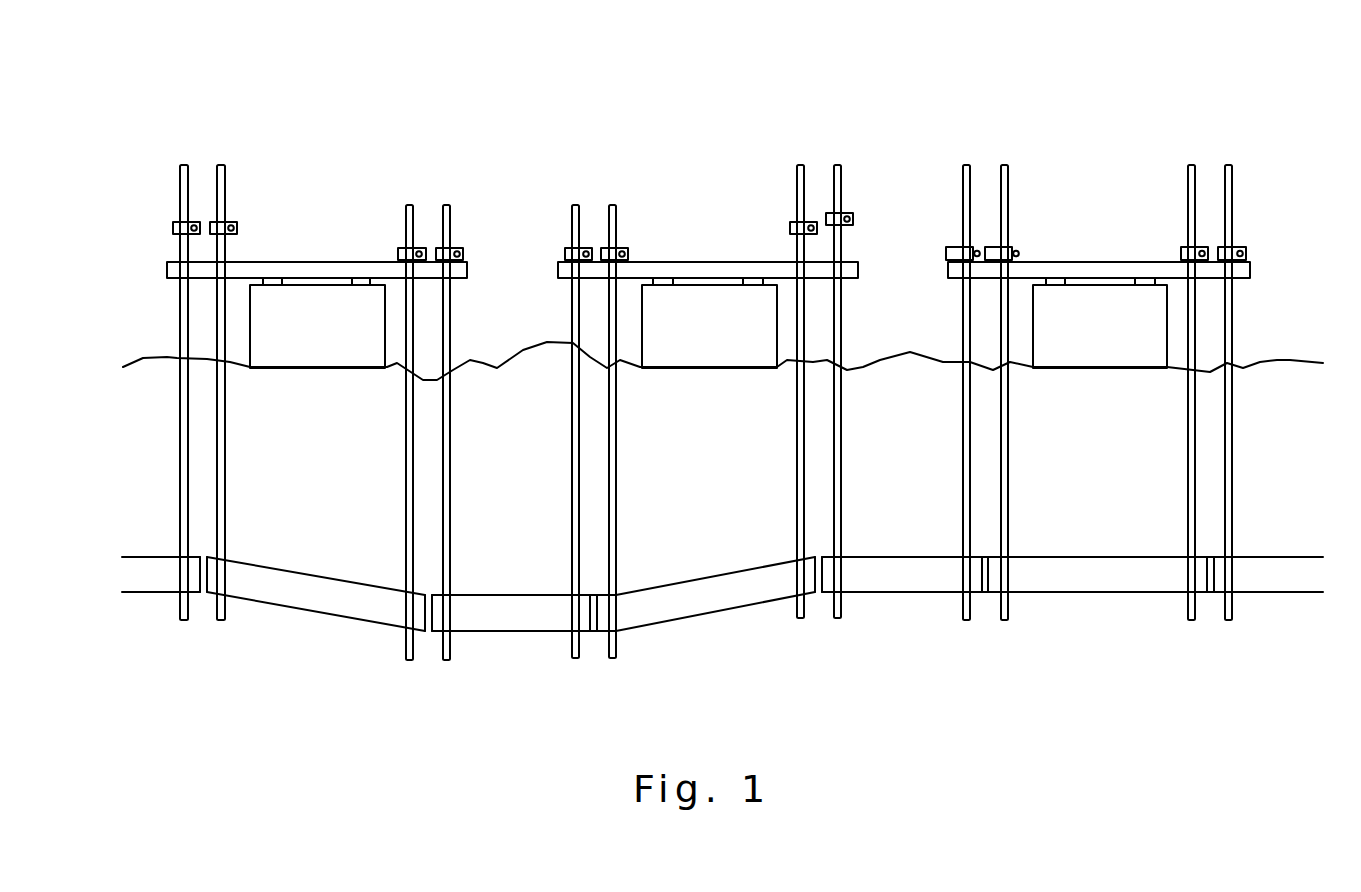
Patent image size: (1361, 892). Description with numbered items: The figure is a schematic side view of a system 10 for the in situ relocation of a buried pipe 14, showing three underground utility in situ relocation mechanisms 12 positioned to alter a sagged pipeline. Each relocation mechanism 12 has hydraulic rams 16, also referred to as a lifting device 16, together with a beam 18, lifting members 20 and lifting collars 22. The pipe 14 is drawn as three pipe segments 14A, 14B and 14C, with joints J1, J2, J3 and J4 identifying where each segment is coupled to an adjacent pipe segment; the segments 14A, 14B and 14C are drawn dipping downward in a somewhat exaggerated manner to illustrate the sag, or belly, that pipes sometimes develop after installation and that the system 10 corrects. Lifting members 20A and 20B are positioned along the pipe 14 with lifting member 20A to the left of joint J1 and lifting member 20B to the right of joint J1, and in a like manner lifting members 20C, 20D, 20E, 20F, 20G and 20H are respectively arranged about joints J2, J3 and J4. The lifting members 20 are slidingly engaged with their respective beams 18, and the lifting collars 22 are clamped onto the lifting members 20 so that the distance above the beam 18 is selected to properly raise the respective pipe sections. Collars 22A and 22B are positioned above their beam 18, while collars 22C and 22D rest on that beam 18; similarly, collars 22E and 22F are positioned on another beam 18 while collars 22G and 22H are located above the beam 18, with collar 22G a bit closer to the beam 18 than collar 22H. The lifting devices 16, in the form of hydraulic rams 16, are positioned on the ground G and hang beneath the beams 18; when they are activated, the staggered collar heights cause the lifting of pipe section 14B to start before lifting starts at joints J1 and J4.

The system 10 is at (1223, 114).
The underground utility in situ relocation mechanism 12 is at (313, 176).
The buried pipe 14 is at (1278, 538).
The pipe segment 14A is at (332, 617).
The pipe segment 14B is at (527, 633).
The pipe segment 14C is at (700, 615).
The hydraulic rams 16 is at (320, 368).
The beam 18 is at (295, 262).
The lifting members 20 is at (160, 443).
The lifting member 20A is at (180, 515).
The lifting member 20B is at (225, 498).
The lifting member 20C is at (406, 545).
The lifting member 20D is at (450, 524).
The lifting member 20E is at (572, 462).
The lifting member 20F is at (616, 445).
The lifting member 20G is at (797, 503).
The lifting member 20H is at (841, 487).
The lifting collars 22 is at (1030, 226).
The lifting collar 22A is at (175, 222).
The lifting collar 22B is at (233, 222).
The lifting collar 22C is at (400, 248).
The lifting collar 22D is at (451, 248).
The lifting collar 22E is at (567, 248).
The lifting collar 22F is at (621, 248).
The lifting collar 22G is at (792, 222).
The lifting collar 22H is at (845, 213).
The joint J1 is at (202, 595).
The joint J2 is at (427, 633).
The joint J3 is at (593, 633).
The joint J4 is at (818, 593).
The ground G is at (1290, 360).